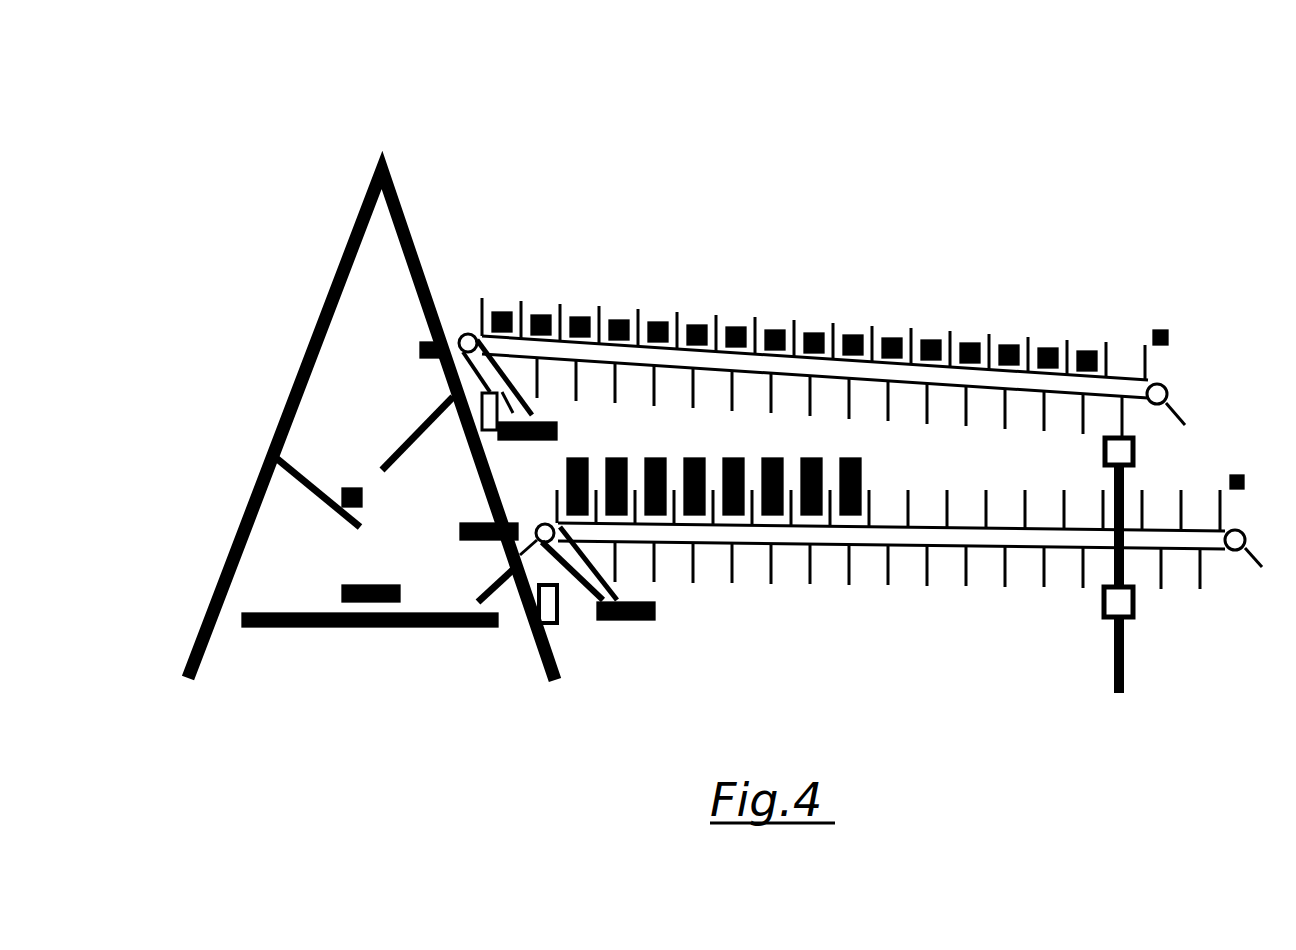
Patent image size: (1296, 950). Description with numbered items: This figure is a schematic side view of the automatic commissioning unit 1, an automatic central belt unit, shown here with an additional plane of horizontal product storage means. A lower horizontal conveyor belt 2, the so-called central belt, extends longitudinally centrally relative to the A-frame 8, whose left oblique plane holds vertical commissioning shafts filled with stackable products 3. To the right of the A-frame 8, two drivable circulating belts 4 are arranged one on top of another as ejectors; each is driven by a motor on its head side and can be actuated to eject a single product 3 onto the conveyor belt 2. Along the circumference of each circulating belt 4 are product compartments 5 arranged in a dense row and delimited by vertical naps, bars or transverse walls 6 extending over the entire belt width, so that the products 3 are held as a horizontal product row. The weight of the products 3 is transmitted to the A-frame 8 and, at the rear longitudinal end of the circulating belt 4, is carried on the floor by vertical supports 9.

The automatic commissioning unit 1 is at (725, 382).
The conveyor belt 2 is at (280, 628).
The products 3 is at (655, 320).
The circulating belt 4 is at (1048, 270).
The product compartments 5 is at (967, 500).
The transverse walls 6 is at (890, 583).
The A-frame 8 is at (340, 255).
The vertical supports 9 is at (1124, 682).